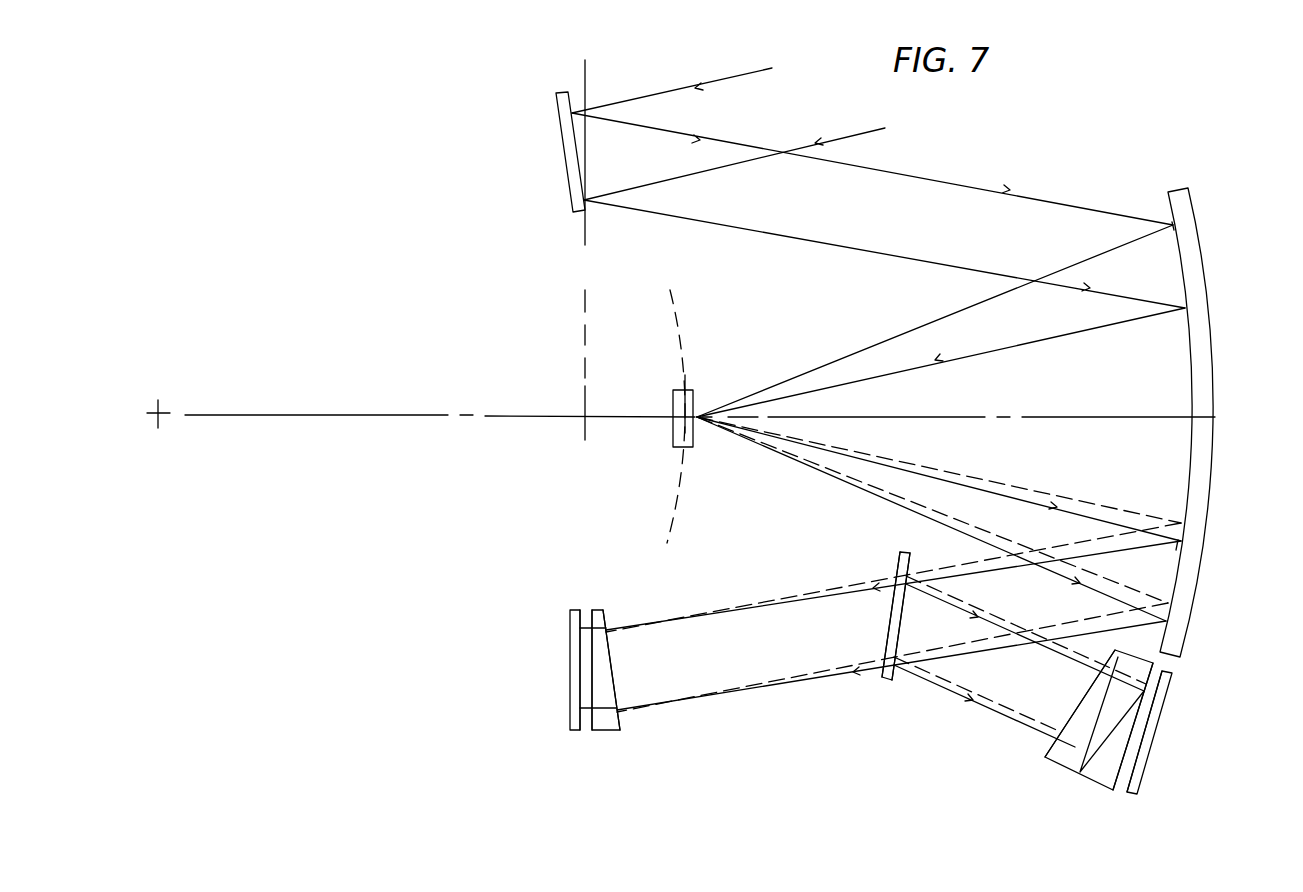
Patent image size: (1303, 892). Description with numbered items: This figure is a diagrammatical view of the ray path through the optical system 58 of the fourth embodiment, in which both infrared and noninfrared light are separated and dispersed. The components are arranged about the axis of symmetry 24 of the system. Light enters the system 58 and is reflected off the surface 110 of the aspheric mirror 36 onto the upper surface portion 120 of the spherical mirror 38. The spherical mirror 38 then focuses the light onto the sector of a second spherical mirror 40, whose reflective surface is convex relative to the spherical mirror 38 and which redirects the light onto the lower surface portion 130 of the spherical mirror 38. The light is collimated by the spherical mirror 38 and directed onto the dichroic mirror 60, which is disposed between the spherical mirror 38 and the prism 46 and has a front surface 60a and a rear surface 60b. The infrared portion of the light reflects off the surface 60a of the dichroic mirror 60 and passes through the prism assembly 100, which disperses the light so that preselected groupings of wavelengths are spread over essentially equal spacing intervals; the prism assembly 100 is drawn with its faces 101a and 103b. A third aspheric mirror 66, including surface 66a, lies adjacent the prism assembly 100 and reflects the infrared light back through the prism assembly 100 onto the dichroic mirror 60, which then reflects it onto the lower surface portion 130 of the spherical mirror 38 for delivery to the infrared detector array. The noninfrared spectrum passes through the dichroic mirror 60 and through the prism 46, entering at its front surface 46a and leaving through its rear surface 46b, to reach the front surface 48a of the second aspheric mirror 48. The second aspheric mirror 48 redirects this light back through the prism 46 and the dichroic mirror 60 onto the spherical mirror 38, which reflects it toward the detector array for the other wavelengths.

The axis of symmetry 24 is at (398, 415).
The aspheric mirror 36 is at (576, 140).
The spherical mirror 38 is at (1215, 455).
The sector of a second spherical mirror 40 is at (690, 392).
The prism 46 is at (614, 652).
The front surface 46a is at (615, 682).
The rear surface 46b is at (590, 694).
The second aspheric mirror 48 is at (563, 672).
The front surface 48a is at (580, 650).
The system 58 is at (493, 476).
The dichroic mirror 60 is at (892, 562).
The front surface 60a is at (905, 612).
The rear surface 60b is at (889, 629).
The third aspheric mirror 66 is at (1171, 707).
The surface 66a is at (1145, 740).
The prism assembly 100 is at (1054, 781).
The entrance face of wedge element 101a is at (1078, 703).
The exit face of wedge element 103b is at (1125, 769).
The surface of the aspheric mirror 110 is at (578, 96).
The upper surface portion 120 is at (1163, 244).
The lower surface portion 130 is at (1172, 562).